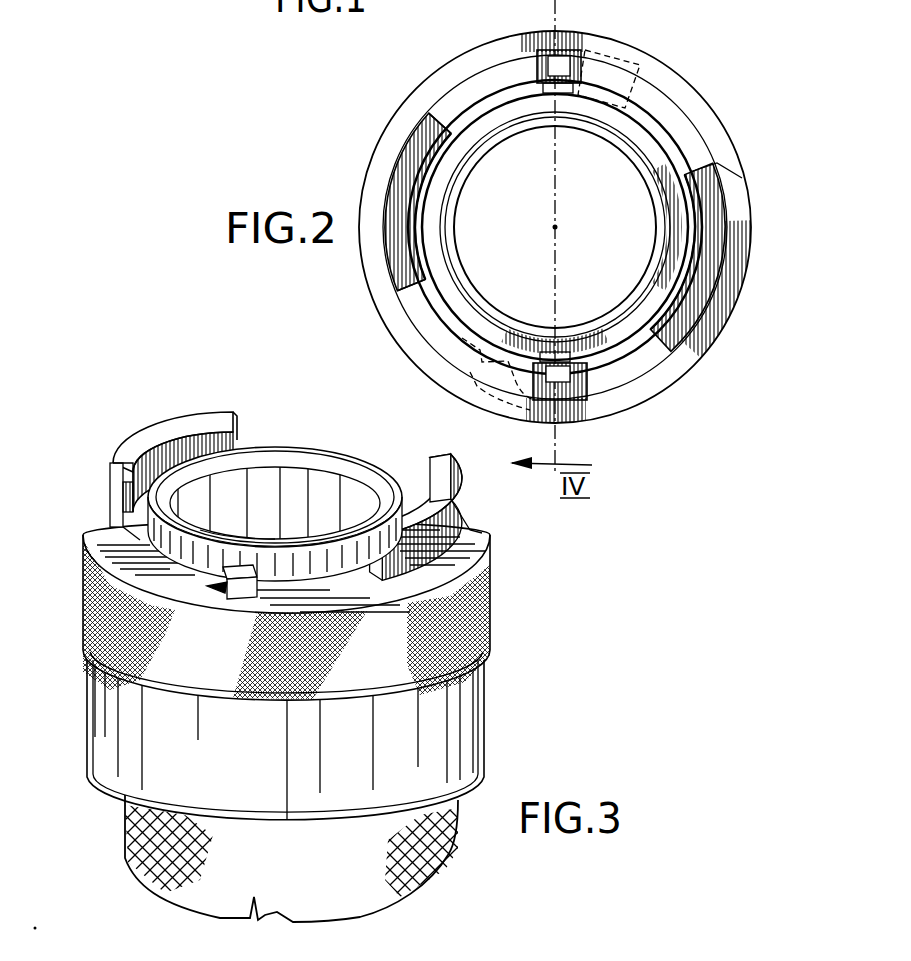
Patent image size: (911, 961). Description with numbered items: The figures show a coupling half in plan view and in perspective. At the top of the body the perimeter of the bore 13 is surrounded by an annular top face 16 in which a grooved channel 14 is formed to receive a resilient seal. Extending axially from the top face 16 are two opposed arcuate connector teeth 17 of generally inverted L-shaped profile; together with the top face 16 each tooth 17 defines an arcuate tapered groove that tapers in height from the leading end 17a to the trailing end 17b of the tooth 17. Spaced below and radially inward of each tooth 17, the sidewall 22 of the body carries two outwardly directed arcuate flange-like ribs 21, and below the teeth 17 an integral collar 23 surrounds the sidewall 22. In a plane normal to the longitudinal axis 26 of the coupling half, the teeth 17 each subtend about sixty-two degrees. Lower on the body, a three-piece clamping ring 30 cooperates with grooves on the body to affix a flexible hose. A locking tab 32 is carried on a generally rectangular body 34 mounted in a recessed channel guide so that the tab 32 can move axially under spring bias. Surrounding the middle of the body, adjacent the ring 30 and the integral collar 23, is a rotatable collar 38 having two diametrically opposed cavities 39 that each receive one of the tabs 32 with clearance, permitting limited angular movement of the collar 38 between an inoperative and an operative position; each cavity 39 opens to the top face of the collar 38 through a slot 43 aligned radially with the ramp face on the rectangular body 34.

In FIG. 3, the bore 13 is at (284, 485).
In FIG. 2, the grooved channel 14 is at (507, 110).
In FIG. 3, the grooved channel 14 is at (395, 462).
In FIG. 2, the annular top face 16 is at (460, 118).
In FIG. 3, the annular top face 16 is at (355, 420).
In FIG. 2, the arcuate connector teeth 17 is at (393, 163).
In FIG. 3, the arcuate connector teeth 17 is at (147, 412).
In FIG. 2, the leading end 17a is at (394, 283).
In FIG. 3, the leading end 17a is at (99, 468).
In FIG. 2, the trailing end 17b is at (425, 125).
In FIG. 3, the trailing end 17b is at (222, 404).
In FIG. 3, the arcuate flange-like ribs 21 is at (122, 512).
In FIG. 3, the sidewall 22 is at (482, 533).
In FIG. 2, the integral collar 23 is at (477, 105).
In FIG. 3, the integral collar 23 is at (298, 585).
In FIG. 2, the longitudinal axis 26 is at (577, 211).
In FIG. 3, the clamping ring 30 is at (470, 712).
In FIG. 2, the locking tab 32 is at (585, 52).
In FIG. 3, the locking tab 32 is at (236, 563).
In FIG. 3, the rectangular body 34 is at (135, 560).
In FIG. 2, the rotatable collar 38 is at (700, 94).
In FIG. 3, the rotatable collar 38 is at (495, 614).
In FIG. 2, the cavities 39 is at (633, 60).
In FIG. 2, the slot 43 is at (590, 68).